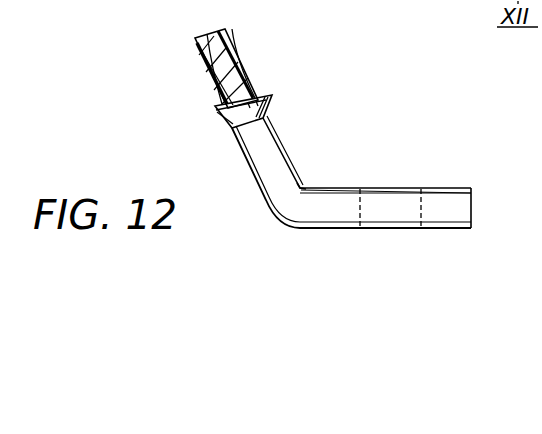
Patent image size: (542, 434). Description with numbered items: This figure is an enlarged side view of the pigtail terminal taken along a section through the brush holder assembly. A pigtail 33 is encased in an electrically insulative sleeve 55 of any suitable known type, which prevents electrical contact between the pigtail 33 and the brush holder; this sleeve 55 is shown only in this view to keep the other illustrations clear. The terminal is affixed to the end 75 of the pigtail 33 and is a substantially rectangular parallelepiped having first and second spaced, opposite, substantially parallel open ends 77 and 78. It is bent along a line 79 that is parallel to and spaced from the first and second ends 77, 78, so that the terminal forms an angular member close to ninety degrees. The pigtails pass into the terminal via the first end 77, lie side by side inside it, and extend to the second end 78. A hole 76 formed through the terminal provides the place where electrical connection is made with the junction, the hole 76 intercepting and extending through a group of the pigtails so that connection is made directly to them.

The pigtail 33 is at (210, 42).
The electrically insulative sleeve 55 is at (208, 81).
The end of the pigtail 75 is at (213, 110).
The first open end 77 is at (218, 118).
The bend line 79 is at (301, 185).
The hole 76 is at (421, 198).
The second open end 78 is at (474, 202).